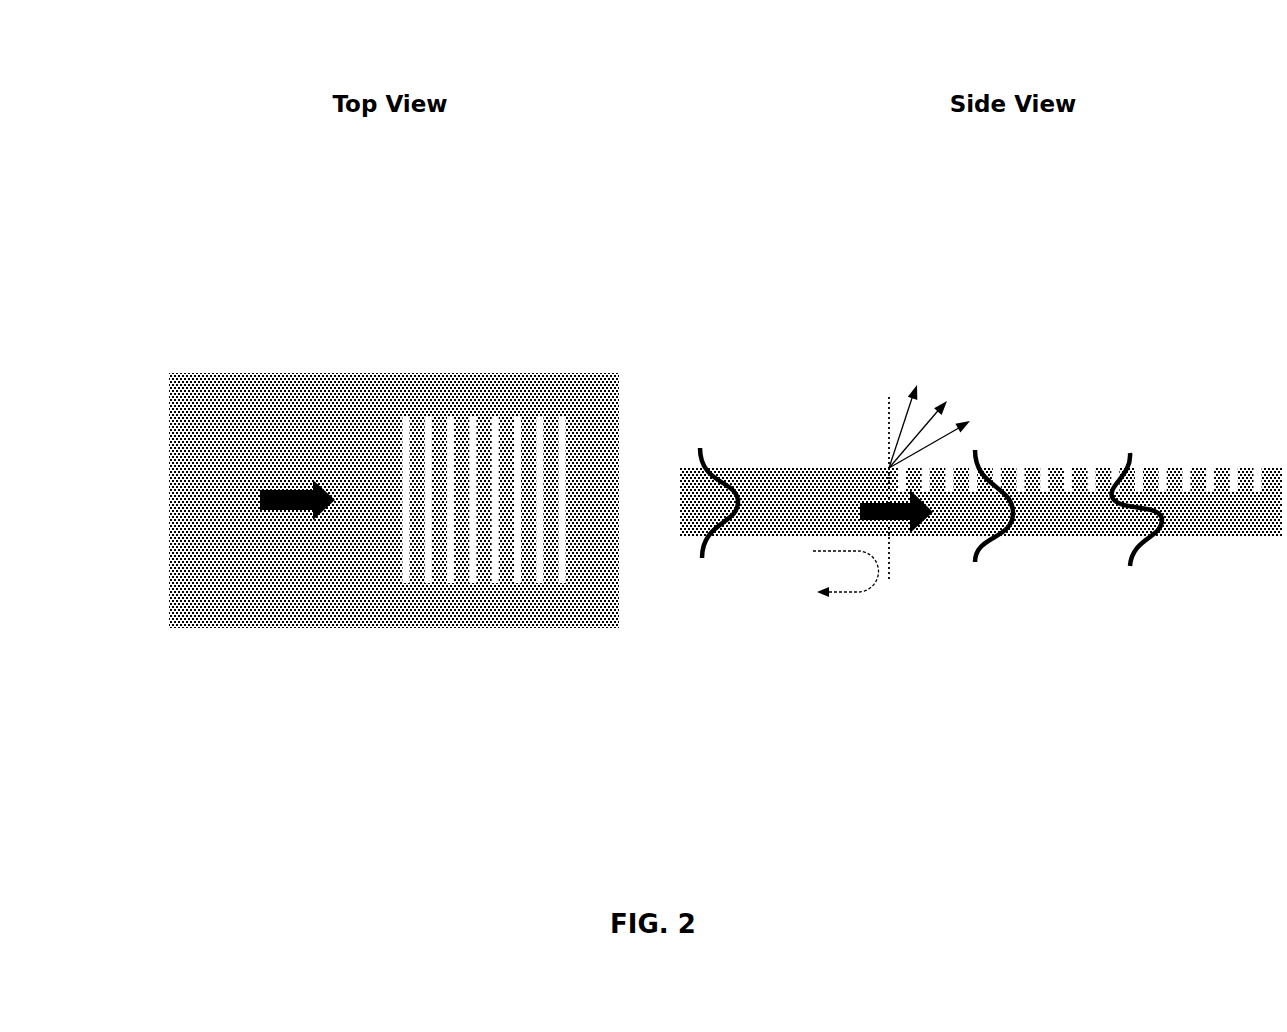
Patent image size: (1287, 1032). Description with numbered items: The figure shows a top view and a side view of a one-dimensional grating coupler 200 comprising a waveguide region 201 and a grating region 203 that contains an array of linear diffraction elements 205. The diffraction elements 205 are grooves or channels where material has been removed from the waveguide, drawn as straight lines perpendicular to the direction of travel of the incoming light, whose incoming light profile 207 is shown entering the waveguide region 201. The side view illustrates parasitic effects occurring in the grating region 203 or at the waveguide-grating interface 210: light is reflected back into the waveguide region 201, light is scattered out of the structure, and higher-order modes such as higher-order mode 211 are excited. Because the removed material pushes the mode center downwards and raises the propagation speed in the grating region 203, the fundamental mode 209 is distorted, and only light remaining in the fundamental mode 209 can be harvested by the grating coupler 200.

The grating coupler 200 is at (150, 116).
The waveguide region 201 is at (273, 400).
The grating region 203 is at (522, 378).
The diffraction elements 205 is at (467, 583).
The incoming light profile 207 is at (708, 543).
The fundamental mode 209 is at (995, 535).
The waveguide-grating interface 210 is at (889, 397).
The higher-order mode 211 is at (1150, 537).